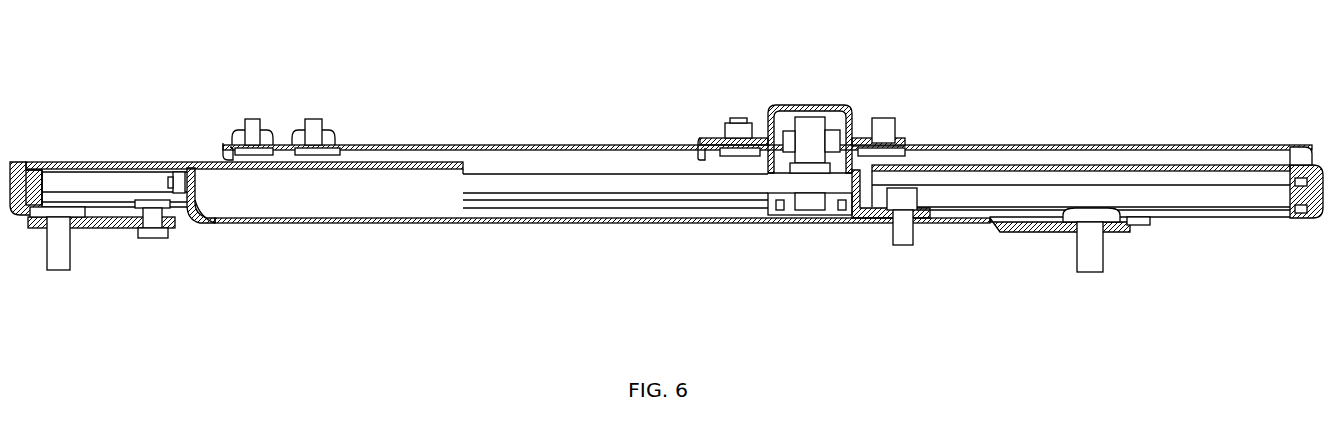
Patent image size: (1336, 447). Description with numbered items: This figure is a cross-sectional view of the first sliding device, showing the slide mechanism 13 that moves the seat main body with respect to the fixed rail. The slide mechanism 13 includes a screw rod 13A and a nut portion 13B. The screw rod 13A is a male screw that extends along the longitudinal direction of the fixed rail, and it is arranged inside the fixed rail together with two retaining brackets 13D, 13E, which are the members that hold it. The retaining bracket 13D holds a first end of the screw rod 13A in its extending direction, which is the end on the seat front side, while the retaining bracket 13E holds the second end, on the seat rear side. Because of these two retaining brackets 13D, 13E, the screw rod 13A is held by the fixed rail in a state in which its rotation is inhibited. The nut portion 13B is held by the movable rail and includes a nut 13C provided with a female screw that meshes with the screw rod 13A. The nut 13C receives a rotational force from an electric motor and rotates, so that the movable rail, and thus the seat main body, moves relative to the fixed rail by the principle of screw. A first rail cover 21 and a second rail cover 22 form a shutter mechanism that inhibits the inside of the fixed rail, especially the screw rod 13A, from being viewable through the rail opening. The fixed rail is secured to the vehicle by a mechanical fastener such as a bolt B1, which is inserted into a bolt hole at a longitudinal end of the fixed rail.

The slide mechanism 13 is at (795, 100).
The screw rod 13A is at (630, 157).
The nut portion 13B is at (830, 120).
The nut 13C is at (808, 205).
The retaining bracket 13D is at (207, 210).
The retaining bracket 13E is at (857, 223).
The first rail cover 21 is at (112, 158).
The second rail cover 22 is at (1163, 165).
The bolt B1 is at (65, 253).